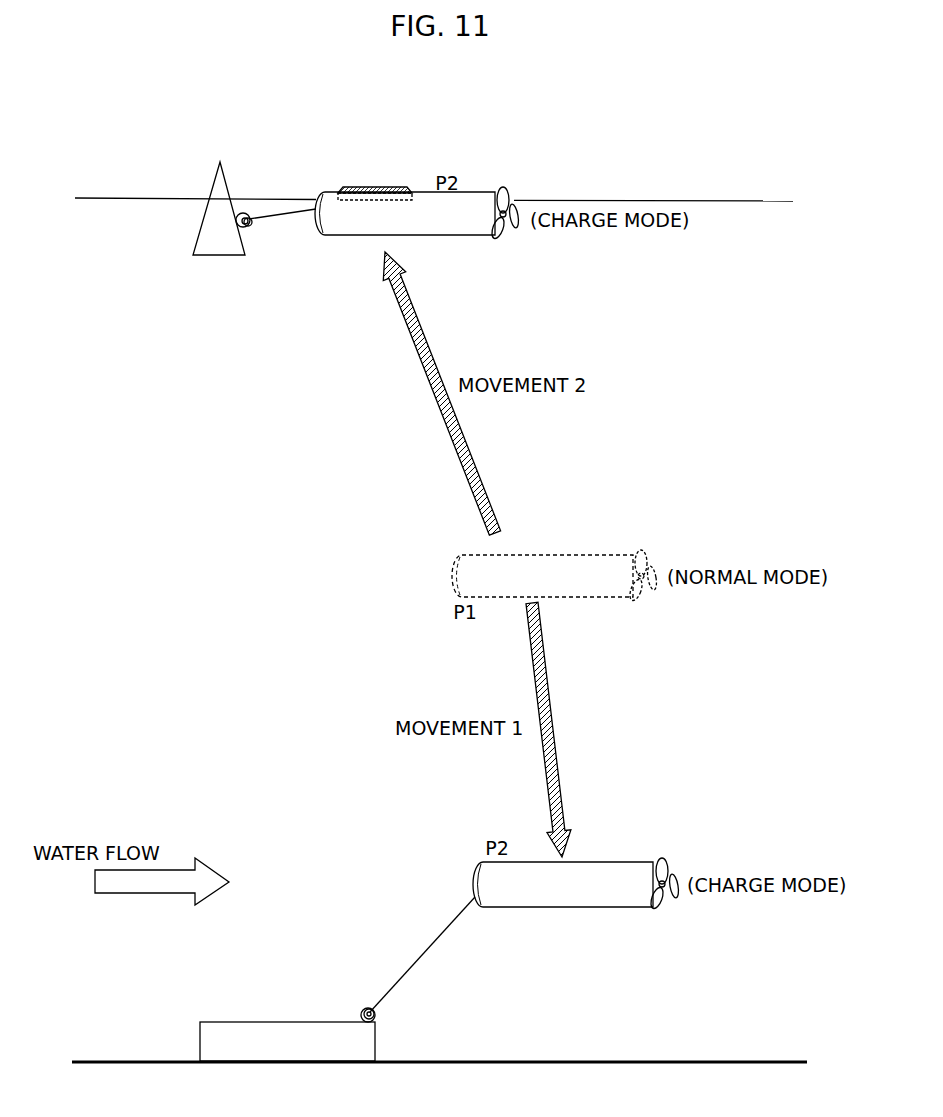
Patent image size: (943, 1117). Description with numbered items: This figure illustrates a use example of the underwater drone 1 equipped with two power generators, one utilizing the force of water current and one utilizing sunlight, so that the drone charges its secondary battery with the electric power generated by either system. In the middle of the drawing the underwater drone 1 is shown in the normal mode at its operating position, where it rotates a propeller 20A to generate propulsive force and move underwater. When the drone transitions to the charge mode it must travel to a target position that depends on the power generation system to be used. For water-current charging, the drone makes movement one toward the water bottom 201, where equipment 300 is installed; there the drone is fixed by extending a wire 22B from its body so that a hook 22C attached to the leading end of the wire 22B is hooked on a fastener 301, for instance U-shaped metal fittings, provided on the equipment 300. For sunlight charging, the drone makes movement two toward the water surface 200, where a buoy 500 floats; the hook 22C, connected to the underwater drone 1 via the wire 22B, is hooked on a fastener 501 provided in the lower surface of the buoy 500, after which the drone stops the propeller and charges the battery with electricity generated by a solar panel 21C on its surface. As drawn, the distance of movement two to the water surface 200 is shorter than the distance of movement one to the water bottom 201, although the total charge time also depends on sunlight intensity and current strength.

The underwater drone 1 is at (462, 237).
The propeller 20A is at (515, 232).
The solar panel 21C is at (368, 187).
The wire 22B is at (300, 220).
The hook 22C is at (255, 228).
The water surface 200 is at (755, 200).
The water bottom 201 is at (762, 1061).
The equipment 300 is at (232, 1022).
The fastener 301 is at (361, 1010).
The buoy 500 is at (192, 222).
The fastener 501 is at (246, 212).